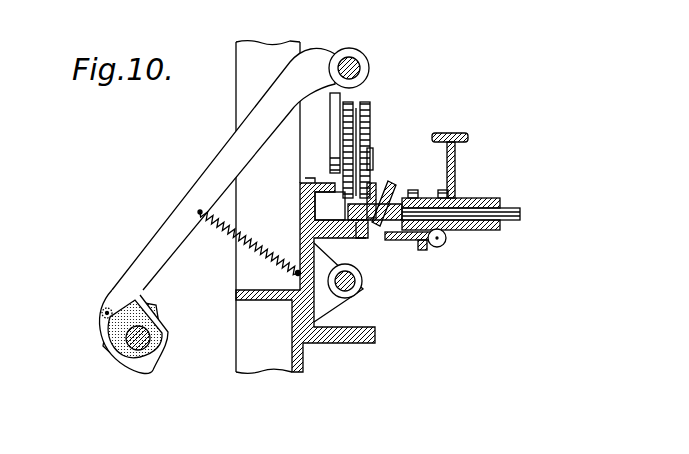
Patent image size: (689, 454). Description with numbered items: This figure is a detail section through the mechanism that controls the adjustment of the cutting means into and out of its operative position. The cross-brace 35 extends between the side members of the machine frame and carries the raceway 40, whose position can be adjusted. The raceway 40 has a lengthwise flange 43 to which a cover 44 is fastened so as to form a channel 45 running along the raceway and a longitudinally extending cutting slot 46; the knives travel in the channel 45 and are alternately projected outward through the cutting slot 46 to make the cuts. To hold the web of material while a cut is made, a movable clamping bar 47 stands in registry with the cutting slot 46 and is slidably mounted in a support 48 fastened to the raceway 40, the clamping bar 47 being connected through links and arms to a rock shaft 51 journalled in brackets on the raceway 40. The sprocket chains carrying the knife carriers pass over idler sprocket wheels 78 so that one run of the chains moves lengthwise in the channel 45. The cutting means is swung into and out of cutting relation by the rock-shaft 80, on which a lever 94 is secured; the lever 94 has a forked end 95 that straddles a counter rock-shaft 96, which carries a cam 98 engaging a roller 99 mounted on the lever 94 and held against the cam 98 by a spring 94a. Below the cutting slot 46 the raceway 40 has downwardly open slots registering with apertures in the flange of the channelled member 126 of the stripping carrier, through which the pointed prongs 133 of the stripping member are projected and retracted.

The cross-brace 35 is at (300, 373).
The raceway 40 is at (374, 192).
The flange 43 is at (302, 212).
The cover 44 is at (328, 183).
The channel 45 is at (313, 217).
The cutting slot 46 is at (360, 235).
The clamping bar 47 is at (522, 213).
The support 48 is at (477, 203).
The rock shaft 51 is at (350, 290).
The idler sprocket wheels 78 is at (372, 122).
The rock-shaft 80 is at (357, 60).
The lever 94 is at (203, 172).
The spring 94a is at (215, 226).
The forked end 95 is at (155, 374).
The counter rock-shaft 96 is at (137, 350).
The cam 98 is at (112, 352).
The roller 99 is at (100, 318).
The channelled member 126 is at (413, 247).
The prongs 133 is at (400, 243).